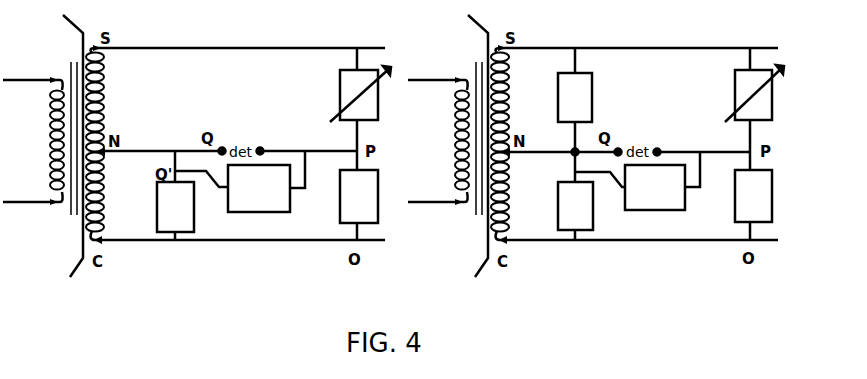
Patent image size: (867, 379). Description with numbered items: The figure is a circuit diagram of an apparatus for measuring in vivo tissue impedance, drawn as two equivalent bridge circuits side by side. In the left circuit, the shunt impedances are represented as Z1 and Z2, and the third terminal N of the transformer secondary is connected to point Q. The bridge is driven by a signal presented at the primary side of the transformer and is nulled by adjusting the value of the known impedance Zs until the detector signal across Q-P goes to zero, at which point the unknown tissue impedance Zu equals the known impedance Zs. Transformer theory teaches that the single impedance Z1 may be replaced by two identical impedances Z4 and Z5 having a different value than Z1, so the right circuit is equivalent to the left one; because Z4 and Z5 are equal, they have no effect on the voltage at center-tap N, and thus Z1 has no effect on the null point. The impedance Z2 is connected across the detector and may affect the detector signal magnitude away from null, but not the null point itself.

The shunt impedance Z1 is at (175, 207).
The shunt impedance Z2 is at (456, 188).
The known impedance Zs is at (556, 95).
The unknown tissue impedance Zu is at (556, 196).
The impedance Z4 is at (575, 97).
The impedance Z5 is at (575, 206).